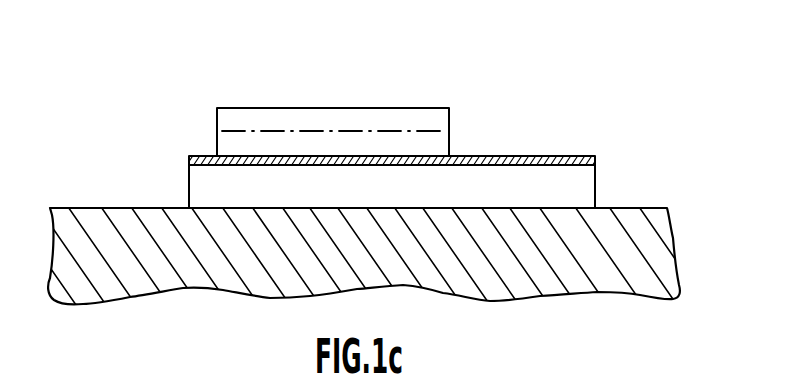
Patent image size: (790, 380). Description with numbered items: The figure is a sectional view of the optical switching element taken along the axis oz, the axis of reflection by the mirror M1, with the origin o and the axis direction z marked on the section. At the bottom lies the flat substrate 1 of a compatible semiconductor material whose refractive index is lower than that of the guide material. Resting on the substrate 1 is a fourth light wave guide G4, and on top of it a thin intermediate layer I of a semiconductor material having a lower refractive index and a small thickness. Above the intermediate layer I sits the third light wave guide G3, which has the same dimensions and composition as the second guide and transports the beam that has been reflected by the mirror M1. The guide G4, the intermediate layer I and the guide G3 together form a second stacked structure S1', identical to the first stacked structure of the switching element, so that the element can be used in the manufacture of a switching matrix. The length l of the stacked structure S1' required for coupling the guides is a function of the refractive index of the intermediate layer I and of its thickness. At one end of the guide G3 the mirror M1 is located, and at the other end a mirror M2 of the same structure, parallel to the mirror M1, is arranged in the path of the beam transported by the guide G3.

The substrate 1 is at (645, 268).
The fourth light wave guide G4 is at (570, 190).
The intermediate layer I is at (597, 157).
The third light wave guide G3 is at (348, 118).
The mirror M1 is at (203, 137).
The mirror M2 is at (450, 128).
The second stacked structure S1' is at (474, 69).
The length of the stacked structure l is at (450, 38).
The origin of axis oz o is at (227, 119).
The axis z is at (431, 143).